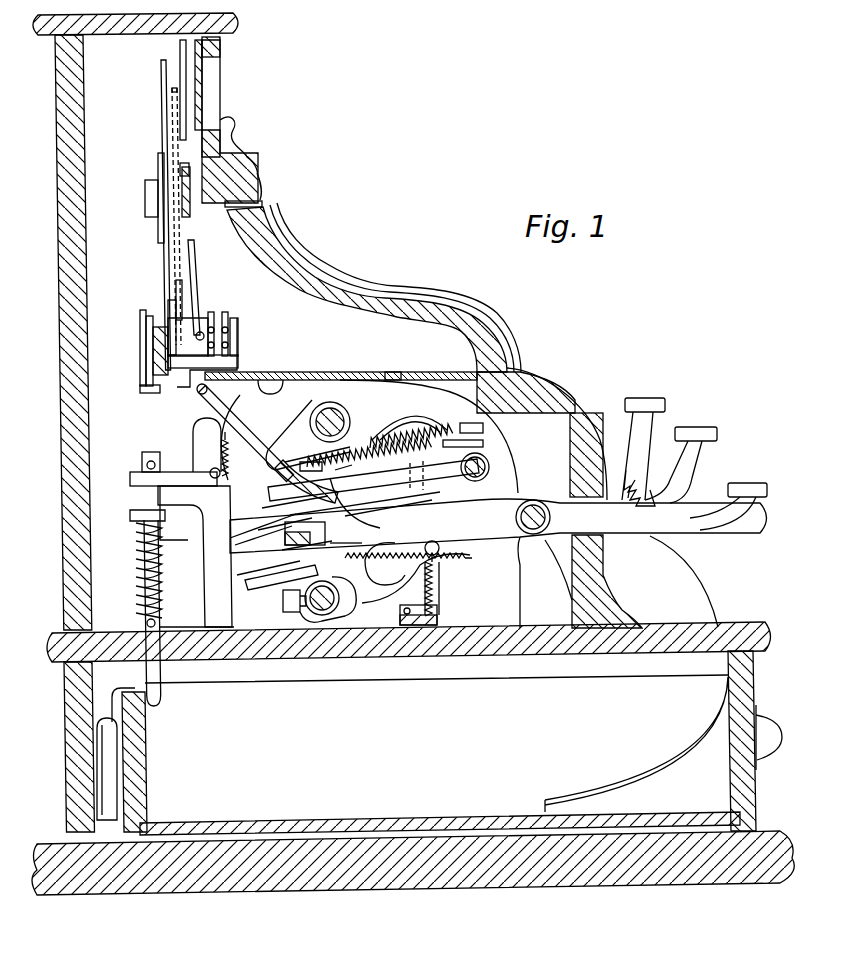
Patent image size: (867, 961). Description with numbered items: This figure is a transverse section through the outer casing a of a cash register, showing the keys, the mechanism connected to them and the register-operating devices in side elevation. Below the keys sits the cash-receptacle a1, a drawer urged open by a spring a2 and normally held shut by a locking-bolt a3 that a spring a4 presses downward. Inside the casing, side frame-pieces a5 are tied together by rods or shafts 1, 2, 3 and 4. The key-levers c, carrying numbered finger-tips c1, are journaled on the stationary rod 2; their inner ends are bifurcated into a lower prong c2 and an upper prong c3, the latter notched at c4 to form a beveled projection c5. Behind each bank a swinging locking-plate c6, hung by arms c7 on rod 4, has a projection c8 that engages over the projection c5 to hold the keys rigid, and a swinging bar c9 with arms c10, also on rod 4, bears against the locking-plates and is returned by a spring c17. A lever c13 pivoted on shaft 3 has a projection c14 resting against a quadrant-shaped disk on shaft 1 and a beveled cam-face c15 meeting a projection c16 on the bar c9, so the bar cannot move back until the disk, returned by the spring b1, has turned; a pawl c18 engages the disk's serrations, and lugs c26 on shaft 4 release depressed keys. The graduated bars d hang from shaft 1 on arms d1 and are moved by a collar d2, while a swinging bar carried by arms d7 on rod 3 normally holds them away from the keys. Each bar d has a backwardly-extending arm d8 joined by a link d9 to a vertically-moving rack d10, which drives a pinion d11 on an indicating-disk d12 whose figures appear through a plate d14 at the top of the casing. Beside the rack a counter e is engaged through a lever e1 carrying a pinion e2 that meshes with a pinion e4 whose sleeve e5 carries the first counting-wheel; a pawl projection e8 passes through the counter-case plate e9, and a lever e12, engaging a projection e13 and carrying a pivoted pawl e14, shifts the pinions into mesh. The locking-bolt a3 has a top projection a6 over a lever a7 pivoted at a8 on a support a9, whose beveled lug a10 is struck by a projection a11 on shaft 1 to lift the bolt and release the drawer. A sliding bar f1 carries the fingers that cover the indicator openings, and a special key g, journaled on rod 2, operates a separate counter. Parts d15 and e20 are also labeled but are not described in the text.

The outer casing a is at (58, 308).
The cash-receptacle a1 is at (436, 743).
The spring a2 is at (97, 776).
The locking-bolt a3 is at (154, 678).
The spring a4 is at (137, 592).
The side frame-pieces a5 is at (152, 435).
The projection a6 is at (142, 466).
The lever a7 is at (163, 478).
The pivot a8 is at (212, 470).
The support a9 is at (233, 500).
The beveled lug a10 is at (305, 457).
The projection a11 is at (348, 473).
The spring b1 is at (462, 425).
The key-levers c is at (498, 526).
The finger-tips c1 is at (633, 403).
The prong c2 is at (400, 615).
The upper prong c3 is at (416, 559).
The notch c4 is at (346, 532).
The beveled projection c5 is at (300, 578).
The swinging locking-plate c6 is at (300, 549).
The arms c7 is at (281, 602).
The projection c8 is at (305, 526).
The swinging bar c9 is at (263, 539).
The arms c10 is at (266, 571).
The lever c13 is at (386, 512).
The projection c14 is at (310, 497).
The beveled cam-face c15 is at (300, 515).
The projection c16 is at (263, 524).
The spring c17 is at (408, 569).
The pawl c18 is at (215, 430).
The lugs c26 is at (217, 443).
The graduated bars d is at (265, 492).
The arms d1 is at (270, 453).
The collar or sleeve d2 is at (372, 415).
The arms d7 is at (422, 482).
The backwardly-extending arm d8 is at (232, 415).
The link connection d9 is at (197, 302).
The vertically-moving rack d10 is at (180, 256).
The pinion d11 is at (177, 207).
The indicating-disk d12 is at (162, 133).
The plate d14 is at (203, 153).
The stop d15 is at (463, 451).
The counter e is at (230, 323).
The lever e1 is at (170, 308).
The lever-pinion e2 is at (180, 285).
The pinion e4 is at (187, 323).
The sleeve e5 is at (195, 333).
The projection e8 is at (240, 352).
The plate e9 is at (234, 330).
The lever e12 is at (152, 357).
The projection e13 is at (147, 395).
The spring-actuated pivoted pawl e14 is at (155, 323).
The plate e20 is at (148, 375).
The sliding bar f1 is at (250, 178).
The special key g is at (641, 482).
The main shaft 1 is at (330, 408).
The rod 2 is at (533, 505).
The rod 3 is at (488, 466).
The shaft 4 is at (310, 612).